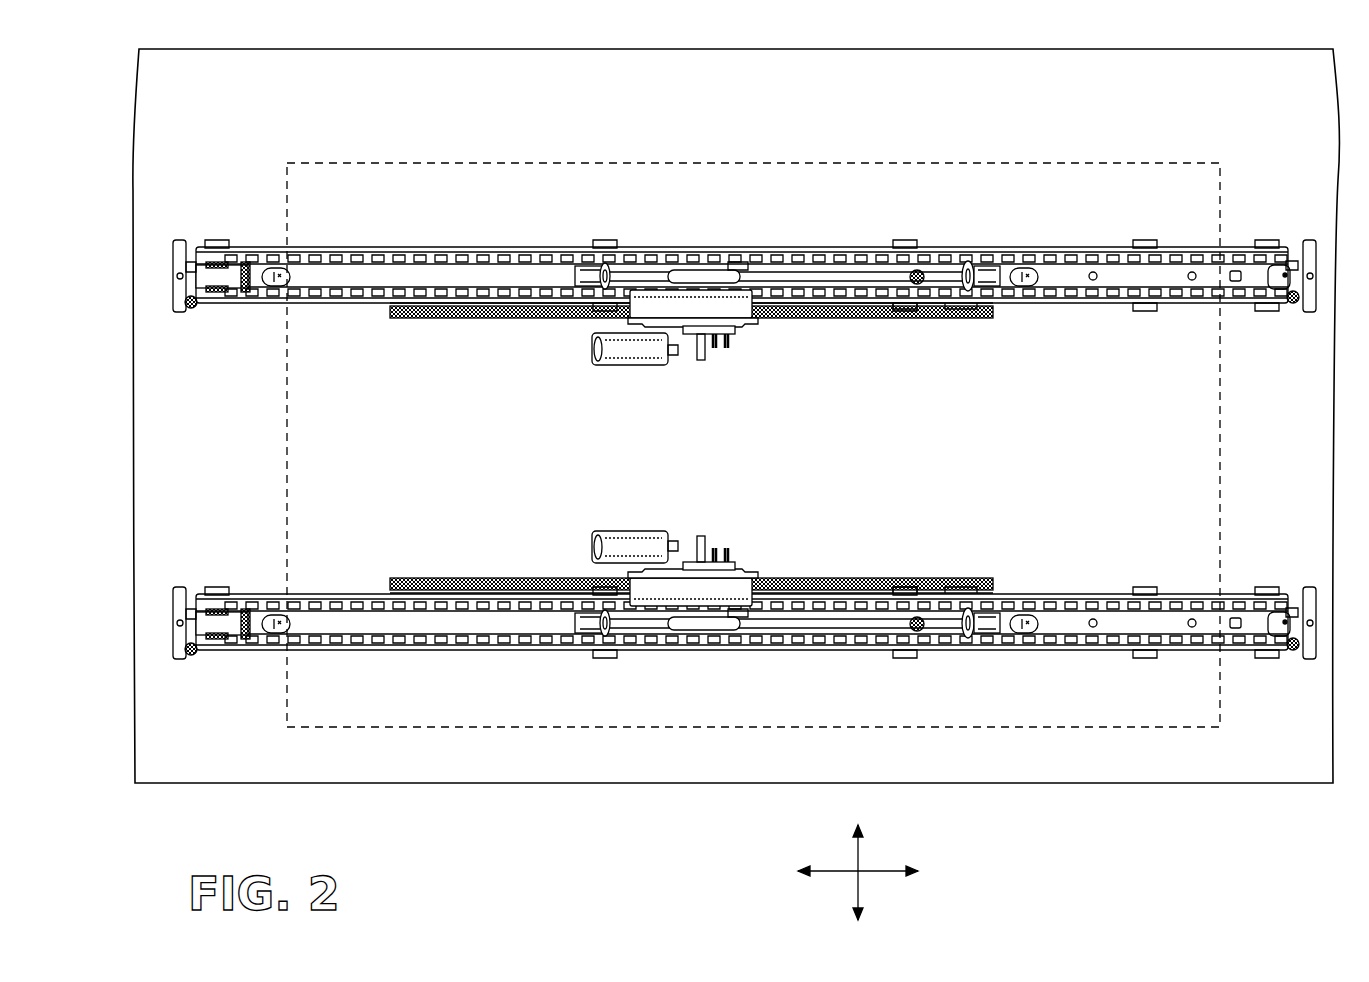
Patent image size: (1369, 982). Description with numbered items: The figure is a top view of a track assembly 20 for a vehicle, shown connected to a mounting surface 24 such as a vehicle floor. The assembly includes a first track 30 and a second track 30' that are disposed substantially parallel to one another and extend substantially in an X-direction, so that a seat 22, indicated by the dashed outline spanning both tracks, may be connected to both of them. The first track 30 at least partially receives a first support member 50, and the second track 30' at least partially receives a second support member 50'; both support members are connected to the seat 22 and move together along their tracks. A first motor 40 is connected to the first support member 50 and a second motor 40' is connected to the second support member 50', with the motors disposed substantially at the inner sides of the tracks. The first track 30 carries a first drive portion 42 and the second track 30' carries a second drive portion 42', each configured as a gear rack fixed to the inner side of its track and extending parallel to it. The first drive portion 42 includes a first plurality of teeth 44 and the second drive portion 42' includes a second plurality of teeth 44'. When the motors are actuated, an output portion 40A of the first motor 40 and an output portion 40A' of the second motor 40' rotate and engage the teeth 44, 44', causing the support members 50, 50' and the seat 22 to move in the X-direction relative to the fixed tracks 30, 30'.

The track assembly 20 is at (236, 142).
The seat 22 is at (415, 163).
The mounting surface 24 is at (650, 49).
The first track 30 is at (744, 244).
The second track 30' is at (744, 651).
The first motor 40 is at (686, 353).
The second motor 40' is at (692, 532).
The output portion 40A is at (771, 361).
The output portion 40A' is at (773, 522).
The first drive portion 42 is at (691, 350).
The second drive portion 42' is at (691, 546).
The first plurality of teeth 44 is at (691, 343).
The second plurality of teeth 44' is at (691, 552).
The first support member 50 is at (787, 234).
The second support member 50' is at (787, 660).